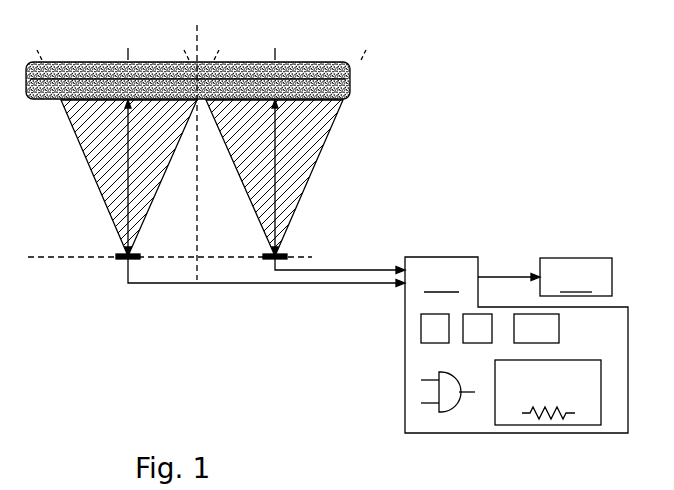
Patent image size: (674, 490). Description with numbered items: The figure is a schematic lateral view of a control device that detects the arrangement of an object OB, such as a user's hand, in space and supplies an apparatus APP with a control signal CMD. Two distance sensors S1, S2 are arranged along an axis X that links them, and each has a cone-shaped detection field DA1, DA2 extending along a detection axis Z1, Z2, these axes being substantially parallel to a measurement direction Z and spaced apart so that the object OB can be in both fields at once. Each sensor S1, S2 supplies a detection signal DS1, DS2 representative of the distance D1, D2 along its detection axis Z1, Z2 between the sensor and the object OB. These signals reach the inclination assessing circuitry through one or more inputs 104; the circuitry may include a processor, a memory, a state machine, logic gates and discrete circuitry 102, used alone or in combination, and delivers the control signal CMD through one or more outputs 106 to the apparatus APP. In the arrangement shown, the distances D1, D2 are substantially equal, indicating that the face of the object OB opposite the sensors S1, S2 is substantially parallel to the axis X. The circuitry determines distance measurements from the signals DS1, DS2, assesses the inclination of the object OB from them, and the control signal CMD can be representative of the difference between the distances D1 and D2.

The discrete circuitry 102 is at (562, 358).
The inputs 104 is at (405, 249).
The outputs 106 is at (482, 272).
The object OB is at (352, 72).
The measurement direction Z is at (199, 35).
The axis linking the sensors X is at (226, 255).
The detection axis Z1 is at (127, 52).
The detection axis Z2 is at (277, 52).
The detection field DA1 is at (105, 163).
The detection field DA2 is at (292, 162).
The distance D1 is at (125, 210).
The distance D2 is at (277, 212).
The distance sensor S1 is at (118, 255).
The distance sensor S2 is at (287, 255).
The detection signal DS1 is at (340, 263).
The detection signal DS2 is at (266, 281).
The control signal CMD is at (506, 267).
The apparatus to be controlled APP is at (576, 277).